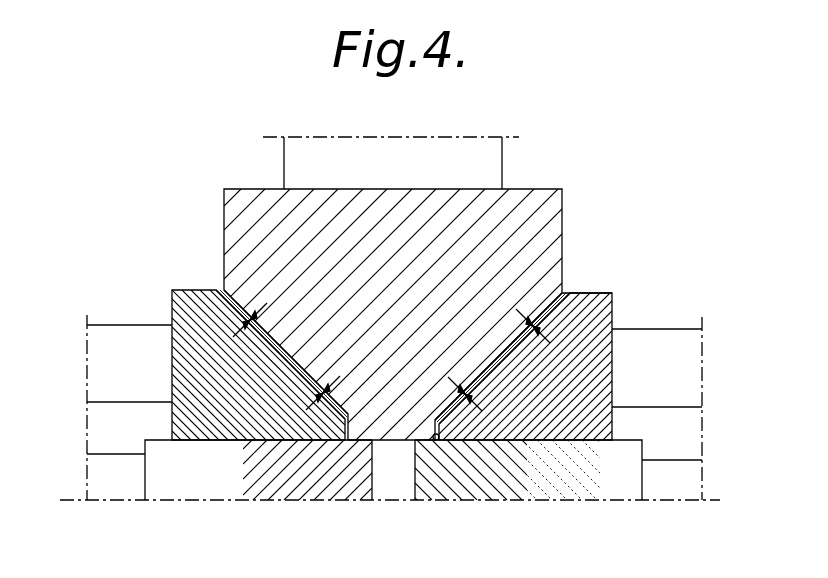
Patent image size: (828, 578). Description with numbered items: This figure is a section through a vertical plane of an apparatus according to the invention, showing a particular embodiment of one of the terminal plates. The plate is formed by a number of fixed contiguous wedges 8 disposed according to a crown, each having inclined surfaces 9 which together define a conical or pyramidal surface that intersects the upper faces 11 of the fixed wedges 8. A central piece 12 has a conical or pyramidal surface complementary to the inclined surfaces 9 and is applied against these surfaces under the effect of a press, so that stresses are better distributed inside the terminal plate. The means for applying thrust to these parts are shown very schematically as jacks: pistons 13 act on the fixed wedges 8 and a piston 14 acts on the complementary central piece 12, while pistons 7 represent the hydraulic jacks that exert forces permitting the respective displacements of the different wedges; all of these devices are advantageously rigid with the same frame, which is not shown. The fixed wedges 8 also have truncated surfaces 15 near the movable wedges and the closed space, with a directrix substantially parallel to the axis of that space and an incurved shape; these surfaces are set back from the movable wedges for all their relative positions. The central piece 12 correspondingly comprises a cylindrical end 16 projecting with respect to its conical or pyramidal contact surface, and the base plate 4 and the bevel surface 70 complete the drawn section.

The base plate 4 is at (166, 437).
The pistons 7 is at (98, 485).
The fixed contiguous wedges 8 is at (188, 319).
The inclined surfaces 9 is at (290, 357).
The upper faces 11 is at (603, 293).
The central piece 12 is at (290, 223).
The pistons 13 is at (102, 368).
The piston 14 is at (393, 153).
The truncated surfaces 15 is at (432, 443).
The cylindrical end 16 is at (391, 441).
The bevel surface 70 is at (565, 297).